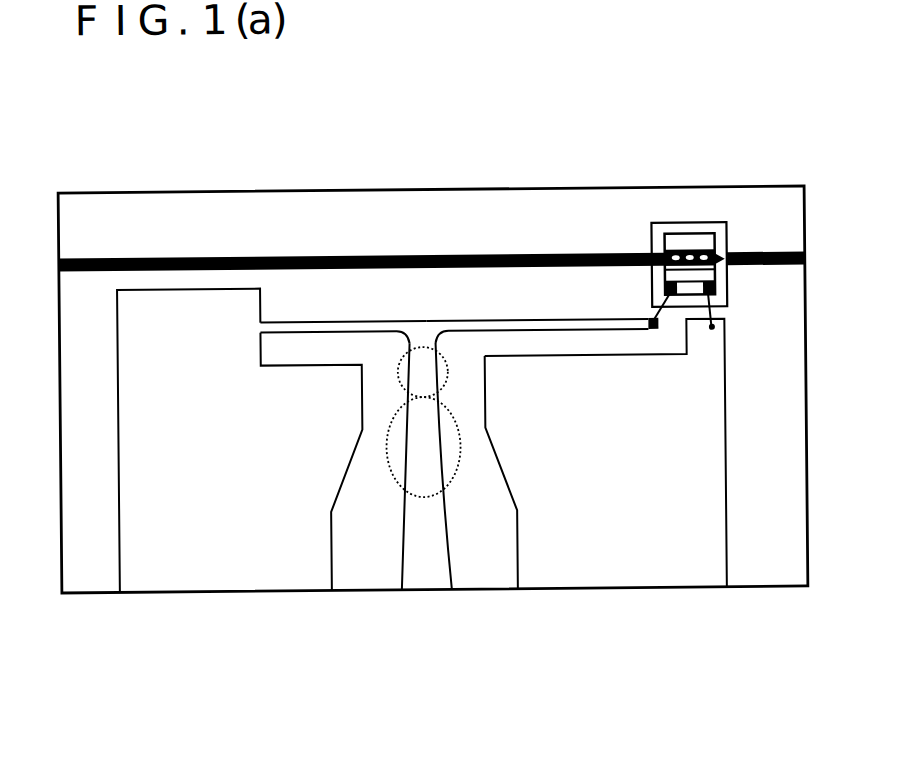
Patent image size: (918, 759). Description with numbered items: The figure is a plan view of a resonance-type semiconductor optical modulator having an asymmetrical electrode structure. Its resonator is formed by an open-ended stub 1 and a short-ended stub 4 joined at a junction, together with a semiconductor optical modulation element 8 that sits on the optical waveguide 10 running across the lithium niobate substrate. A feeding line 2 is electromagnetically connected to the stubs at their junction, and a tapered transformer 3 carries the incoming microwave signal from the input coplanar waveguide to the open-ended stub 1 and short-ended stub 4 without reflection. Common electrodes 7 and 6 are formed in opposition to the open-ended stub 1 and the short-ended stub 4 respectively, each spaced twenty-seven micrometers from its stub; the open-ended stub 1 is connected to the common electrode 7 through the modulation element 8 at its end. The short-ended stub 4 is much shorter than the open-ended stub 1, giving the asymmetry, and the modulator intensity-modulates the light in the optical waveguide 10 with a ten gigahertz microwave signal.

The open-ended stub 1 is at (537, 305).
The feeding line 2 is at (433, 329).
The tapered transformer 3 is at (426, 504).
The short-ended stub 4 is at (342, 225).
The common electrode 6 is at (274, 571).
The common electrode 7 is at (590, 569).
The semiconductor optical modulation element 8 is at (695, 218).
The optical waveguide 10 is at (193, 242).